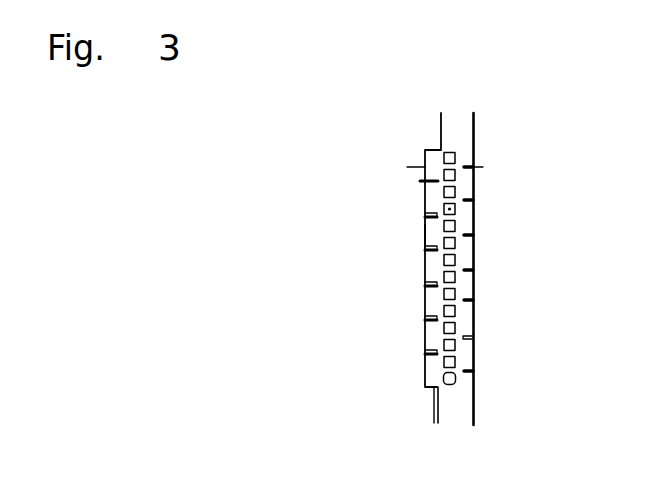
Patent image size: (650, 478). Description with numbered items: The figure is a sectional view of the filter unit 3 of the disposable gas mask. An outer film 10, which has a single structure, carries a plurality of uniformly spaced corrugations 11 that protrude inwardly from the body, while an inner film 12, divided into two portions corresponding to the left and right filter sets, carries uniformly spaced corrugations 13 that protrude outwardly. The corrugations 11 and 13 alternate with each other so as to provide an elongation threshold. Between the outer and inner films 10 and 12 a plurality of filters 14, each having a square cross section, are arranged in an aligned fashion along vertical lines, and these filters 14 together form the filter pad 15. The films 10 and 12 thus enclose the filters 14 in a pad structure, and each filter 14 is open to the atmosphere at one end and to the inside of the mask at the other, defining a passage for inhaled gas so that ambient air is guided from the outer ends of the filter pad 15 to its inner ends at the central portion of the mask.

The filter unit 3 is at (422, 333).
The outer film 10 is at (425, 238).
The corrugations 11 is at (427, 288).
The inner film 12 is at (474, 252).
The corrugations 13 is at (474, 272).
The filters 14 is at (456, 155).
The filter pad 15 is at (455, 225).